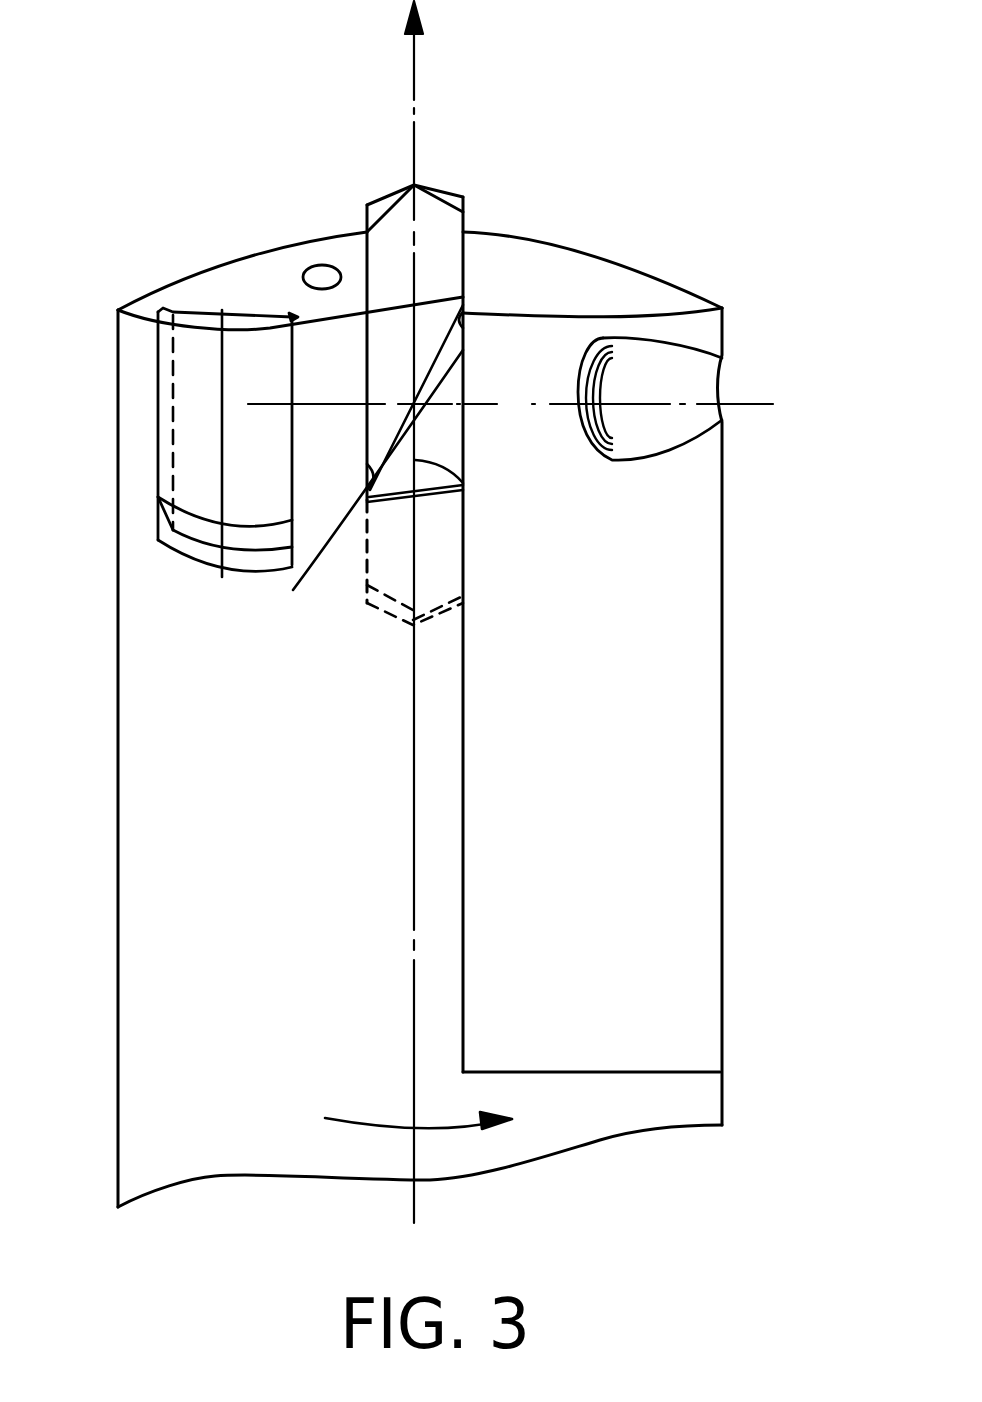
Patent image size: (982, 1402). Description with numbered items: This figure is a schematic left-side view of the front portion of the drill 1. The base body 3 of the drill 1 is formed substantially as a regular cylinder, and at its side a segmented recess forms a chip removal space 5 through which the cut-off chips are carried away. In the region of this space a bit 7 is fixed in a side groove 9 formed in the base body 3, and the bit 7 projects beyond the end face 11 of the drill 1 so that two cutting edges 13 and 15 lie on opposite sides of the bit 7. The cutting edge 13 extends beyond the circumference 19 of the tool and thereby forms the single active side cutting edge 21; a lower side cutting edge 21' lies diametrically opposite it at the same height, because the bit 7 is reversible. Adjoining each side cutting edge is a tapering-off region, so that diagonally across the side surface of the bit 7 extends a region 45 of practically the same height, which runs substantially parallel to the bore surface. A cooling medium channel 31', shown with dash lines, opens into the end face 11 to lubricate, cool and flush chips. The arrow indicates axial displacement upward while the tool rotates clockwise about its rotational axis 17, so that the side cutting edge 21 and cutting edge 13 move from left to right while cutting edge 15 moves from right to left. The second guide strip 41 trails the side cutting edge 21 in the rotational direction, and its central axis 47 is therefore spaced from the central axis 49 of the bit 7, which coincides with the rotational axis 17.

The drill 1 is at (770, 347).
The base body 3 is at (687, 1102).
The chip removal space 5 is at (670, 922).
The bit 7 is at (392, 194).
The side groove 9 is at (437, 500).
The end face 11 is at (197, 292).
The cutting edge 13 is at (465, 232).
The cutting edge 15 is at (367, 203).
The rotational axis 17 is at (415, 125).
The circumference 19 is at (722, 735).
The side cutting edge 21 is at (488, 335).
The side cutting edge 21' is at (349, 493).
The cooling medium channel 31' is at (252, 239).
The second guide strip 41 is at (278, 482).
The region of practically the same height 45 is at (430, 378).
The central axis of the second guide strip 47 is at (220, 433).
The central axis of the bit 49 is at (467, 488).